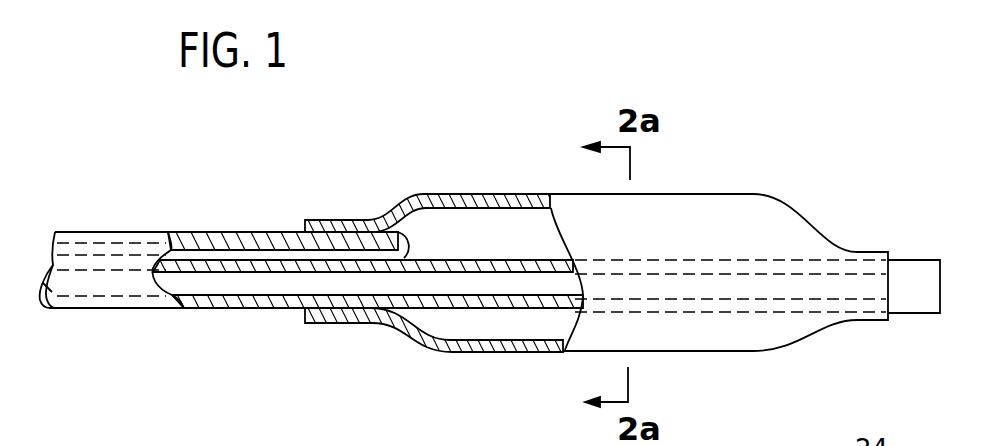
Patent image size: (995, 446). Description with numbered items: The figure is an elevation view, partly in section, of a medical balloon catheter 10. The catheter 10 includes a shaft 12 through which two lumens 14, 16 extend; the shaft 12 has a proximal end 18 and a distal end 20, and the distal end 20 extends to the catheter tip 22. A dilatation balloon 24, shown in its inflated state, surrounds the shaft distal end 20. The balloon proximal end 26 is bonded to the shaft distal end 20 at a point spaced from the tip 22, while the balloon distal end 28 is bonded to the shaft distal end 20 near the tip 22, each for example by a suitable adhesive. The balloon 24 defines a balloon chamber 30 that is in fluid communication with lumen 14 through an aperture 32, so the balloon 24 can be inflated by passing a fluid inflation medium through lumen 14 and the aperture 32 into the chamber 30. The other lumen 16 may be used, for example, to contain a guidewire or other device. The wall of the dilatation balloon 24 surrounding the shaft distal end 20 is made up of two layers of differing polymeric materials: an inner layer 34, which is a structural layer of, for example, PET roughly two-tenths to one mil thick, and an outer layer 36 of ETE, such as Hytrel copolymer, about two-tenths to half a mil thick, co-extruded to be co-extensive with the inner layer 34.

The catheter 10 is at (714, 165).
The shaft 12 is at (127, 238).
The lumen 14 is at (247, 252).
The lumen 16 is at (225, 280).
The proximal end 18 is at (118, 300).
The distal end 20 is at (498, 305).
The catheter tip 22 is at (917, 298).
The dilatation balloon 24 is at (705, 342).
The balloon proximal end 26 is at (362, 221).
The balloon distal end 28 is at (795, 227).
The balloon chamber 30 is at (435, 237).
The aperture 32 is at (404, 258).
The inner layer 34 is at (517, 193).
The outer layer 36 is at (463, 202).